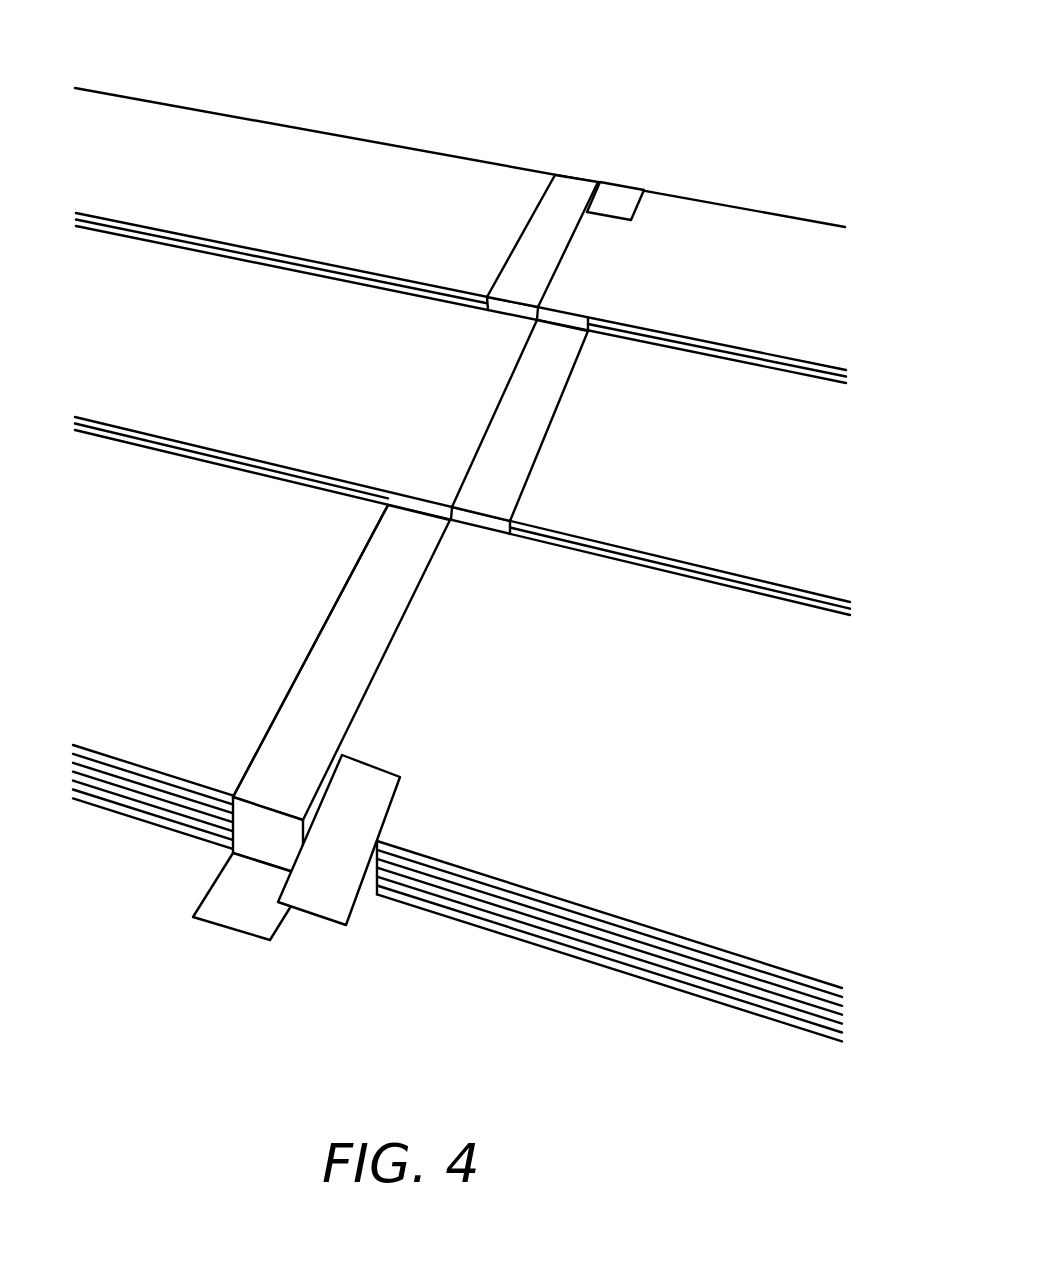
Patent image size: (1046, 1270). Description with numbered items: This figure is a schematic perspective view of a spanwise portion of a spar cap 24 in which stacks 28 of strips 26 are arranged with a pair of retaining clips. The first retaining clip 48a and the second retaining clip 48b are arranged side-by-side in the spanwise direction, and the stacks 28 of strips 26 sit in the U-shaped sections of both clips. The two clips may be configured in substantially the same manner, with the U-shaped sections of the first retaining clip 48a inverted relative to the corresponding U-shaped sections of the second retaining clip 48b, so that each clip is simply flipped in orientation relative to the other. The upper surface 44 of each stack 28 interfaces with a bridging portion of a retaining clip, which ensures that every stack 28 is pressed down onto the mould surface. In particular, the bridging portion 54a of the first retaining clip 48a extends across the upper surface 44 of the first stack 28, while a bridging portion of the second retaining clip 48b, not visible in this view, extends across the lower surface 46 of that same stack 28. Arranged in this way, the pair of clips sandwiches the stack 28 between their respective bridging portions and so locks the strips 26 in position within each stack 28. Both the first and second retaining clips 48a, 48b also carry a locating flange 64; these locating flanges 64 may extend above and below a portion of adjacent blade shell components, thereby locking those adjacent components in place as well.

The spar cap 24 is at (570, 90).
The strips 26 is at (777, 368).
The stacks 28 is at (349, 173).
The upper surface 44 is at (458, 230).
The lower surface 46 is at (640, 978).
The first retaining clip 48a is at (286, 605).
The second retaining clip 48b is at (583, 424).
The bridging portion 54a is at (297, 735).
The locating flange 64 is at (188, 893).